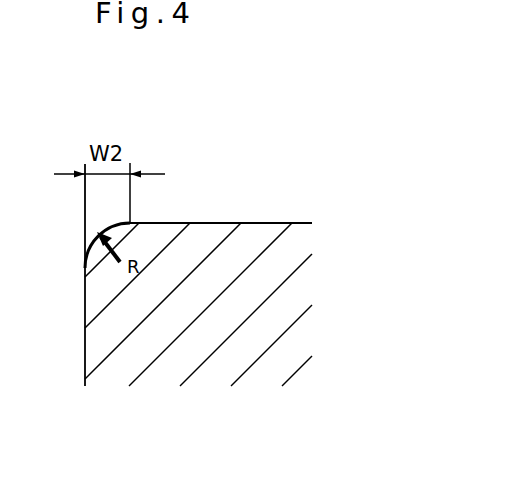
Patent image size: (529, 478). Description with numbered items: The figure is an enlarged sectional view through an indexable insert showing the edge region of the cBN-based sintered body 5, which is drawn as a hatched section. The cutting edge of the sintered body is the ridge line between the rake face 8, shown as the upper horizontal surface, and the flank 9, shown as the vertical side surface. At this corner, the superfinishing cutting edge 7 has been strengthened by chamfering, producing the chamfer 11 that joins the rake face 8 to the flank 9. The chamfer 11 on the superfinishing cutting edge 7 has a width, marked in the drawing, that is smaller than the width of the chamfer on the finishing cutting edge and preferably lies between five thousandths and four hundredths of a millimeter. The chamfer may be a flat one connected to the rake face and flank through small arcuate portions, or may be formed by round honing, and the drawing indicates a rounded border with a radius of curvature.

The cBN-based sintered body 5 is at (277, 343).
The superfinishing cutting edge 7 is at (78, 220).
The rake face 8 is at (263, 220).
The flank 9 is at (83, 343).
The chamfer 11 is at (85, 240).